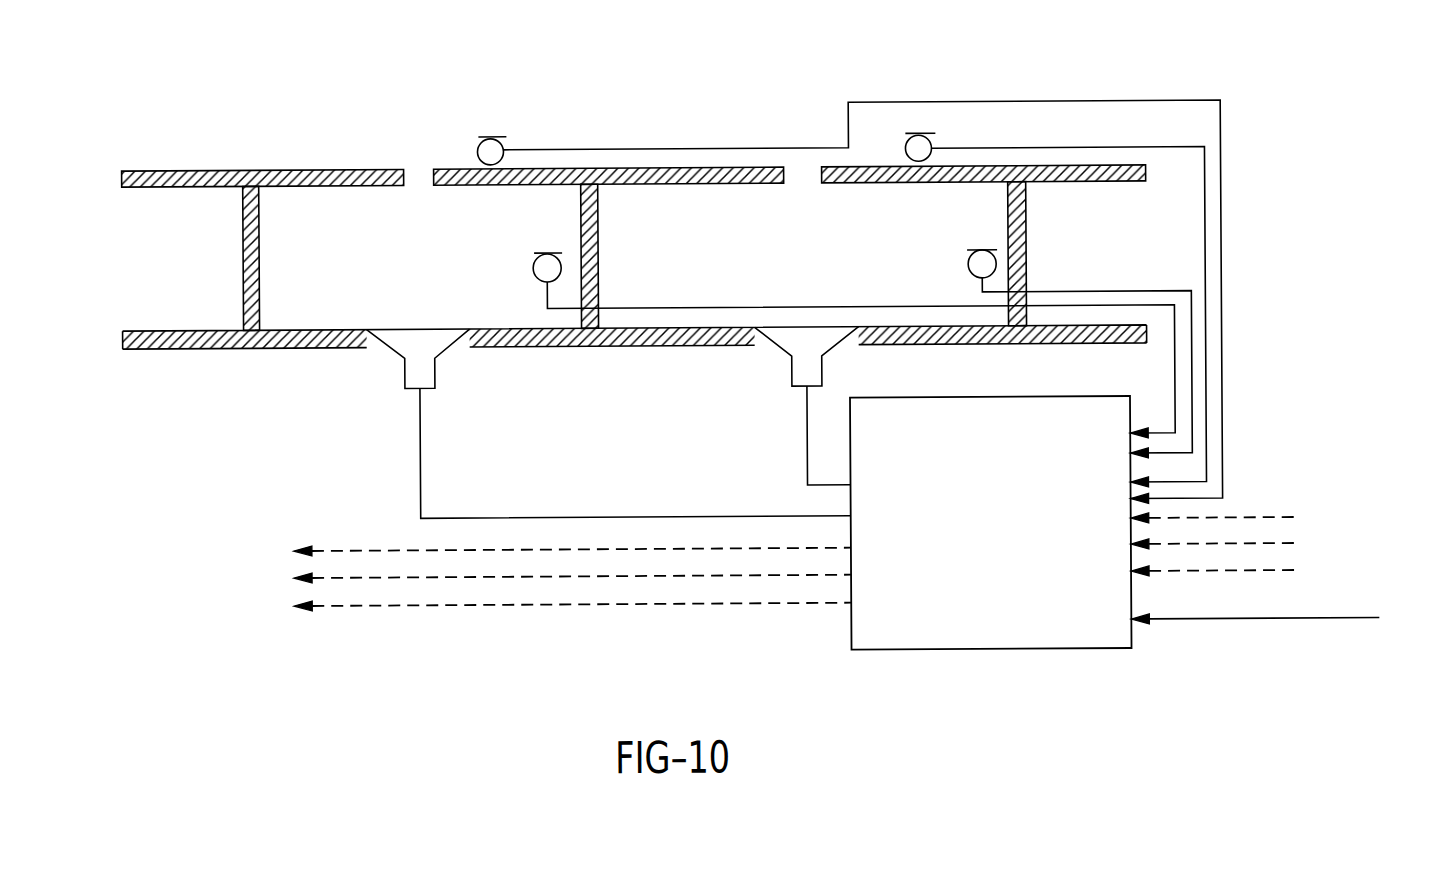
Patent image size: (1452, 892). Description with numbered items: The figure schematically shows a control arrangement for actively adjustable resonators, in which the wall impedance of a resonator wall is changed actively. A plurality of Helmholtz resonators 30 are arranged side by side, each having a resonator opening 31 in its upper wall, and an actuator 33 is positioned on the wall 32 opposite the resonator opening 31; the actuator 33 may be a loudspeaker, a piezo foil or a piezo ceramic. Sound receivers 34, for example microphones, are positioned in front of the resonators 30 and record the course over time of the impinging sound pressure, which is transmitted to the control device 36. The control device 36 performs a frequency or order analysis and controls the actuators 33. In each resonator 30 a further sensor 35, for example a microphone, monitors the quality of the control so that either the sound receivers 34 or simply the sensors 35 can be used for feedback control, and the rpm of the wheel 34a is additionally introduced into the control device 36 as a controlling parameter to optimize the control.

The Helmholtz resonator 30 is at (330, 235).
The resonator opening 31 is at (420, 167).
The wall 32 is at (275, 347).
The actuator 33 is at (404, 357).
The sound receiver 34 is at (488, 145).
The rpm of the wheel 34a is at (1287, 618).
The sensor 35 is at (534, 270).
The control device 36 is at (1005, 549).